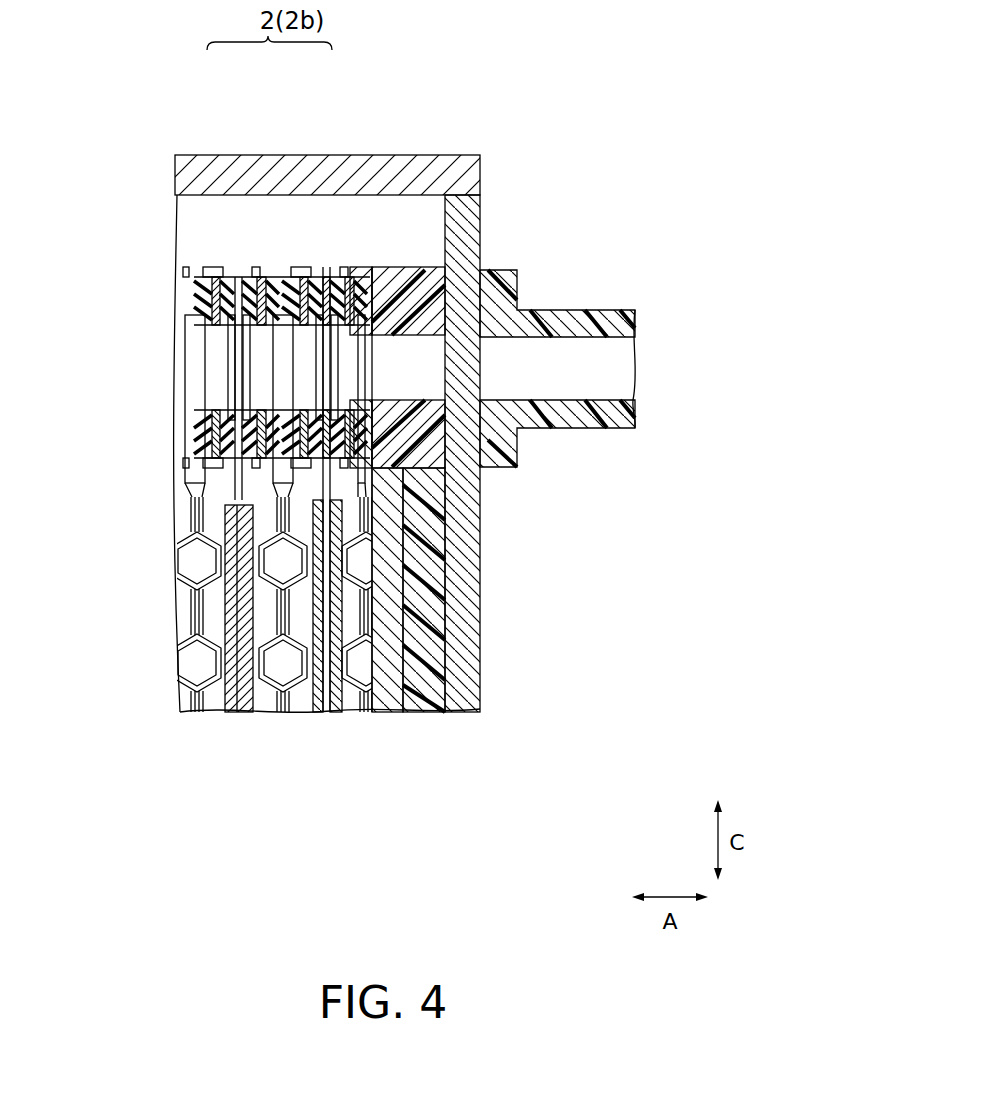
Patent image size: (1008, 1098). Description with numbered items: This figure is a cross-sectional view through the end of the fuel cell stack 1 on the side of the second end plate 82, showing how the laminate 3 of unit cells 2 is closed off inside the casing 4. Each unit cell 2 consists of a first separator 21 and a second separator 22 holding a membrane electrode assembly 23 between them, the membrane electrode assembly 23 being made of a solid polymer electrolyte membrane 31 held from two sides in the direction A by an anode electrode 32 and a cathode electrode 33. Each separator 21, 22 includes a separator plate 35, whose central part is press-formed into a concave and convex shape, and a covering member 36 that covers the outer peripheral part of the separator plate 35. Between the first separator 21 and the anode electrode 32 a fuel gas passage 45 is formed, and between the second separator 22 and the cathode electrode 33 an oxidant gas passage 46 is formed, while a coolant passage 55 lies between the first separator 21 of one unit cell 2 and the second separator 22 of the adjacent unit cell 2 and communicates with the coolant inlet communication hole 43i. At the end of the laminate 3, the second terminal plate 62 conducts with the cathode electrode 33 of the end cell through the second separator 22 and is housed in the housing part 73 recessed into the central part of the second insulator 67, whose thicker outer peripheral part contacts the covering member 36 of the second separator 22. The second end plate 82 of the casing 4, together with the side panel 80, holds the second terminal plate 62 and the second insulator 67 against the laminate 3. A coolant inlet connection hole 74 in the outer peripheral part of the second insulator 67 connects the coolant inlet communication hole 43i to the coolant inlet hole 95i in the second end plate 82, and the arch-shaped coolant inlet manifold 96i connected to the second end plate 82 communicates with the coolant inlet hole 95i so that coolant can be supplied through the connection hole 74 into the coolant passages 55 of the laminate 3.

The fuel cell stack 1 is at (578, 130).
The unit cell 2 is at (195, 251).
The laminate 3 is at (237, 273).
The casing 4 is at (187, 142).
The first separator 21 is at (288, 283).
The second separator 22 is at (327, 252).
The membrane electrode assembly 23 is at (303, 245).
The solid polymer electrolyte membrane 31 is at (329, 715).
The anode electrode 32 is at (320, 713).
The cathode electrode 33 is at (335, 713).
The separator plate 35 is at (255, 632).
The covering member 36 is at (343, 247).
The coolant inlet communication hole 43i is at (383, 348).
The fuel gas passage 45 is at (299, 616).
The oxidant gas passage 46 is at (400, 710).
The coolant passage 55 is at (282, 668).
The second terminal plate 62 is at (428, 710).
The second insulator 67 is at (420, 270).
The housing part 73 is at (372, 495).
The coolant inlet connection hole 74 is at (416, 349).
The side panel 80 is at (357, 287).
The second end plate 82 is at (485, 690).
The coolant inlet hole 95i is at (476, 340).
The coolant inlet manifold 96i is at (605, 310).